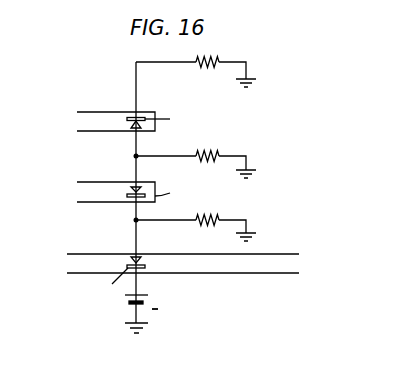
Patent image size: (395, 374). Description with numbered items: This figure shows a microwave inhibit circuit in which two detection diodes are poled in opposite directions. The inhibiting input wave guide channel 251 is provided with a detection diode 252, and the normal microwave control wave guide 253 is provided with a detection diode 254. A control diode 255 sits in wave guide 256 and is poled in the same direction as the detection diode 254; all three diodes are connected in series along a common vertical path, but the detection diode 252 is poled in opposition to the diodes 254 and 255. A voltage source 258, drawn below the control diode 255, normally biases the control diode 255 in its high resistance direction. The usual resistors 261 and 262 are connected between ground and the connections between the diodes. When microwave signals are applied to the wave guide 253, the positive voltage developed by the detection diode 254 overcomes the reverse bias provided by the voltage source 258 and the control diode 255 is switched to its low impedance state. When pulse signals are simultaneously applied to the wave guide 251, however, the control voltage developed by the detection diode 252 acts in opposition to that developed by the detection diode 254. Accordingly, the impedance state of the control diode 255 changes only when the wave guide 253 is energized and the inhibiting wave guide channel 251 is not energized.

The inhibiting input wave guide channel 251 is at (95, 117).
The detection diode 252 is at (138, 116).
The normal microwave control wave guide 253 is at (95, 186).
The detection diode 254 is at (139, 186).
The control diode 255 is at (138, 257).
The wave guide 256 is at (92, 262).
The voltage source 258 is at (153, 300).
The resistor 261 is at (206, 219).
The resistor 262 is at (206, 154).